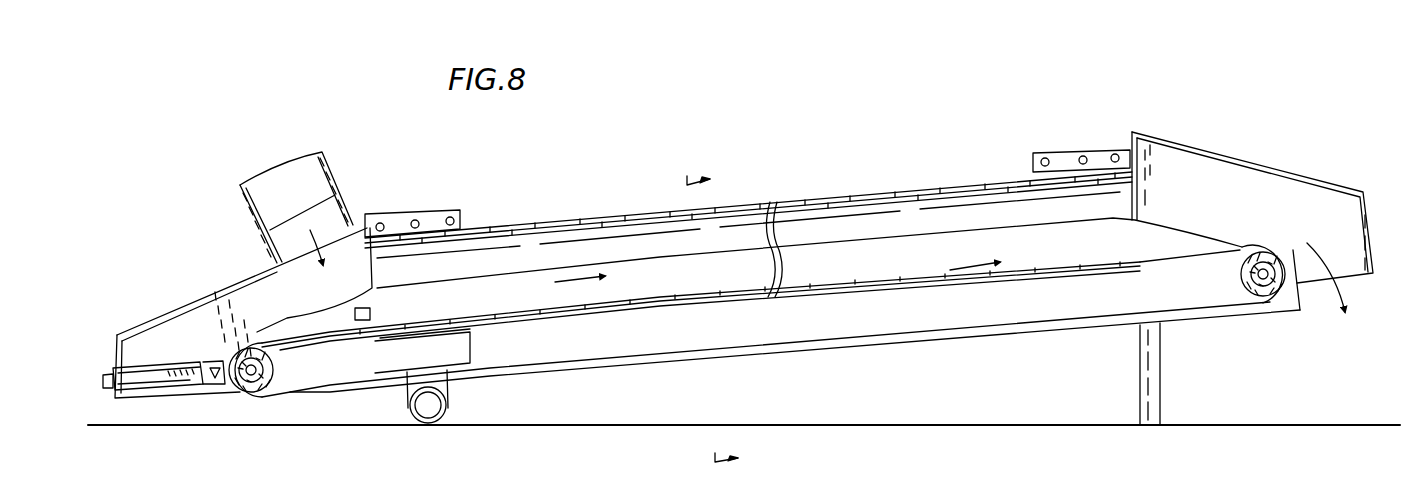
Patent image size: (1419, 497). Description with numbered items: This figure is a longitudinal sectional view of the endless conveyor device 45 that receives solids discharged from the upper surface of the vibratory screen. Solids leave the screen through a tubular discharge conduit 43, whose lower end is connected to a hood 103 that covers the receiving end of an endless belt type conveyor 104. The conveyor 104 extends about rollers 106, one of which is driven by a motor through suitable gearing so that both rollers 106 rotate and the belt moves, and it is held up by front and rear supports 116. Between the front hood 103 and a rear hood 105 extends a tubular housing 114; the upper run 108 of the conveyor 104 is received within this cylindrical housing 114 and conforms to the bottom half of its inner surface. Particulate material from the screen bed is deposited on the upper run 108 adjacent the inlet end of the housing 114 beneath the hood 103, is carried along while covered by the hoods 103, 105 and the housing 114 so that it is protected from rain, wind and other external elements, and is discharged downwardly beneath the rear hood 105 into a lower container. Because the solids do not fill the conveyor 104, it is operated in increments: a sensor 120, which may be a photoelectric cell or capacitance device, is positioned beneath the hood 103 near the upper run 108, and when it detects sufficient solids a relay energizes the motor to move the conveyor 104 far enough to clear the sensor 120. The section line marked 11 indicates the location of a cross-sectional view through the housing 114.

The section line 11- 11 is at (728, 318).
The tubular discharge conduit 43 is at (333, 172).
The endless conveyor device 45 is at (804, 176).
The hood 103 is at (215, 292).
The endless belt type conveyor 104 is at (698, 292).
The rear hood 105 is at (1283, 168).
The rollers 106 is at (257, 332).
The upper run 108 is at (830, 280).
The tubular housing 114 is at (620, 213).
The front and rear supports 116 is at (450, 407).
The sensor 120 is at (372, 312).